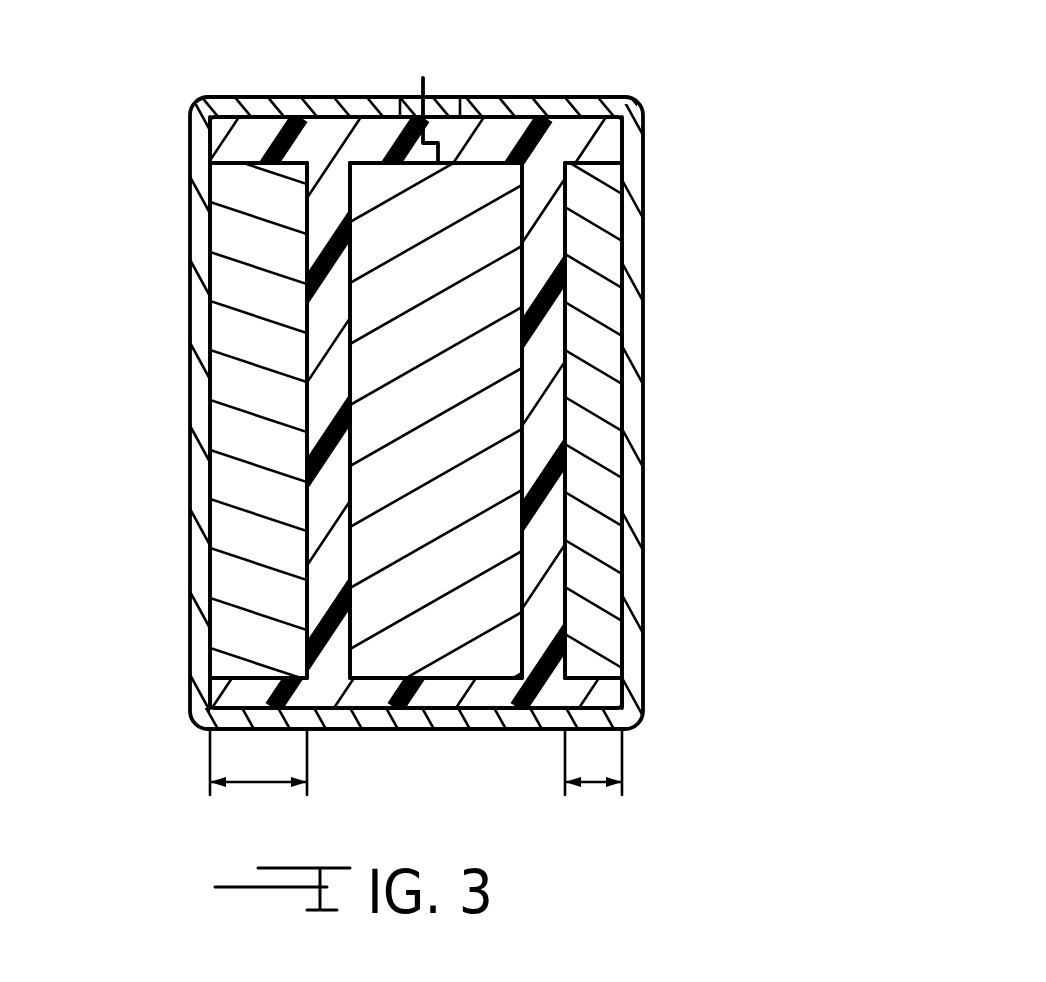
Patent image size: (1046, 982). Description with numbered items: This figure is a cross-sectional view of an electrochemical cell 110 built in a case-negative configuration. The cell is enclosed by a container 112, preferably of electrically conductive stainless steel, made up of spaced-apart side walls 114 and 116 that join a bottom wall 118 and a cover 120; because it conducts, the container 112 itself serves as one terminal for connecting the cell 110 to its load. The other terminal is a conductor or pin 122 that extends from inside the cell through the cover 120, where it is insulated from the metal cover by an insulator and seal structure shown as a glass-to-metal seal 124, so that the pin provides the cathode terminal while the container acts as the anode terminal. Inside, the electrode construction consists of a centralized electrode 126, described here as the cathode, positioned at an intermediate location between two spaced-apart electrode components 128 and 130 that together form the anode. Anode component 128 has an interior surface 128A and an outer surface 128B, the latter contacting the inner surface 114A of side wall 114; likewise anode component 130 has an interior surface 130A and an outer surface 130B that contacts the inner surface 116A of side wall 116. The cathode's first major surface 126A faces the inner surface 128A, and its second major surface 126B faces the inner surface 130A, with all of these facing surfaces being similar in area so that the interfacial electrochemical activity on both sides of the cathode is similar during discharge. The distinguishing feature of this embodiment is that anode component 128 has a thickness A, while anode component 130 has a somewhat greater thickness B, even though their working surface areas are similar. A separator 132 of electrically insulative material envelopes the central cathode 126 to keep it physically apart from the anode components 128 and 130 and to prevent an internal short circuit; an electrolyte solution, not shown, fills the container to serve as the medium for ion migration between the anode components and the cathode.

The electrochemical cell 110 is at (677, 153).
The container 112 is at (645, 240).
The side wall 114 is at (645, 189).
The inner surface of side wall 114A is at (606, 557).
The side wall 116 is at (188, 291).
The inner surface of side wall 116A is at (226, 652).
The bottom wall 118 is at (485, 729).
The cover 120 is at (598, 97).
The pin 122 is at (430, 86).
The glass-to-metal seal 124 is at (450, 97).
The central electrode 126 is at (500, 352).
The first major surface of central electrode 126A is at (528, 393).
The second major surface of central electrode 126B is at (350, 380).
The anode component 128 is at (605, 296).
The interior surface of anode component 128A is at (561, 449).
The outer surface of anode component 128B is at (628, 488).
The anode component 130 is at (225, 470).
The interior surface of anode component 130A is at (312, 528).
The outer surface of anode component 130B is at (207, 609).
The separator 132 is at (245, 138).
The thickness of anode component 128 A is at (632, 785).
The thickness of anode component 130 B is at (253, 782).